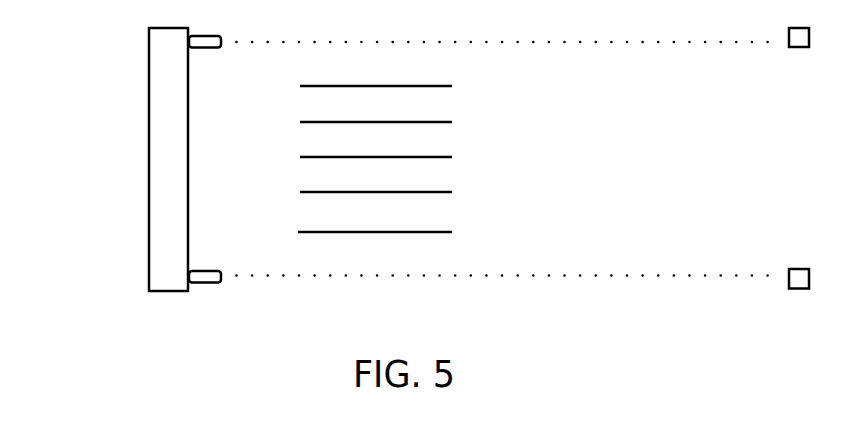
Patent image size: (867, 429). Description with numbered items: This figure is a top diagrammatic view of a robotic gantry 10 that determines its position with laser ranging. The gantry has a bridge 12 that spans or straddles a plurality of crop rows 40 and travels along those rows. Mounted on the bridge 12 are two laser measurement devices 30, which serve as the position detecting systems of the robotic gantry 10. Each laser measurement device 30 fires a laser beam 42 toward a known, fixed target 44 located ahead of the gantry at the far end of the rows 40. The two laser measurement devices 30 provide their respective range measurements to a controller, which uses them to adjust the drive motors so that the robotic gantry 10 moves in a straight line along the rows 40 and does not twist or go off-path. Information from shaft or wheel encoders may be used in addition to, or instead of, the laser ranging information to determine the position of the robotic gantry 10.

The robotic gantry 10 is at (159, 159).
The bridge 12 is at (157, 103).
The laser measurement device 30 is at (210, 54).
The crop rows 40 is at (462, 68).
The laser beams 42 is at (677, 50).
The fixed targets 44 is at (783, 53).